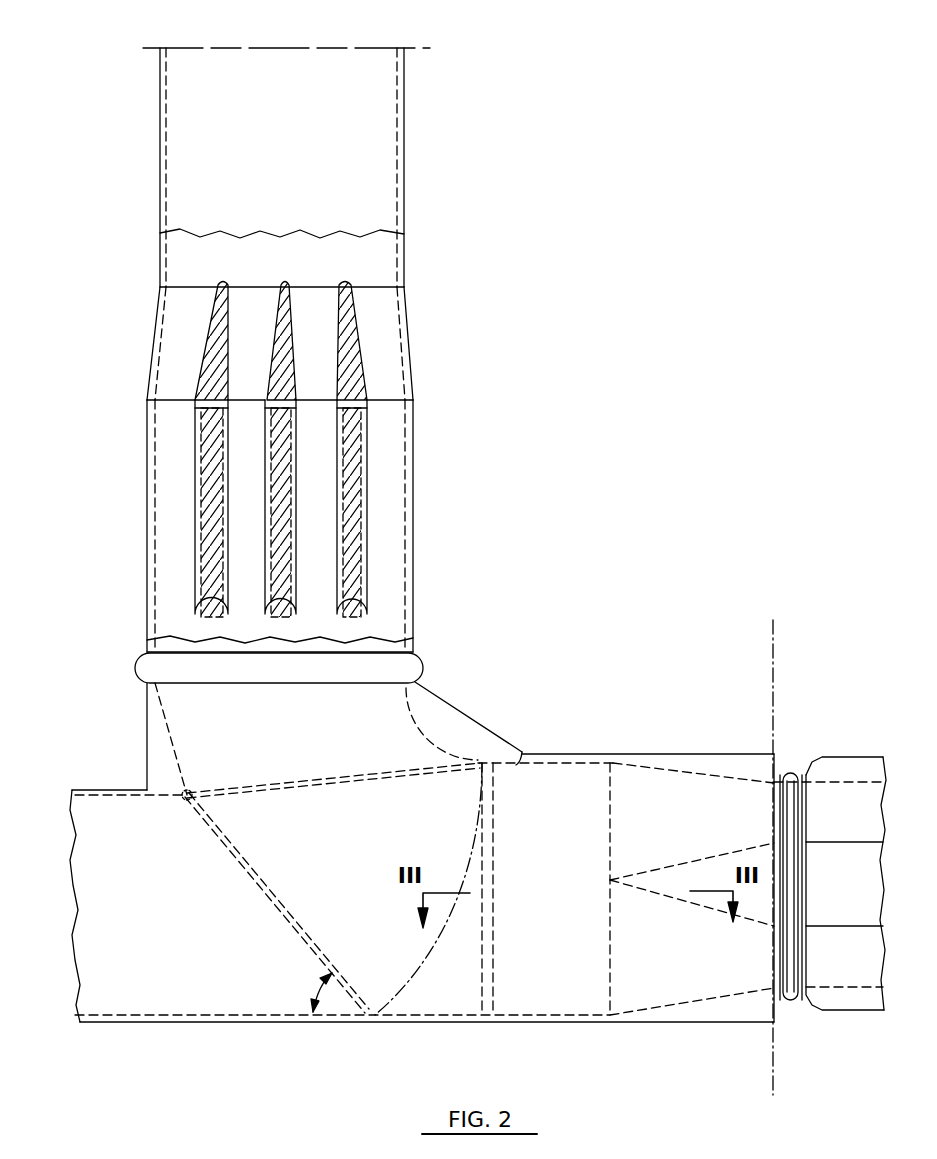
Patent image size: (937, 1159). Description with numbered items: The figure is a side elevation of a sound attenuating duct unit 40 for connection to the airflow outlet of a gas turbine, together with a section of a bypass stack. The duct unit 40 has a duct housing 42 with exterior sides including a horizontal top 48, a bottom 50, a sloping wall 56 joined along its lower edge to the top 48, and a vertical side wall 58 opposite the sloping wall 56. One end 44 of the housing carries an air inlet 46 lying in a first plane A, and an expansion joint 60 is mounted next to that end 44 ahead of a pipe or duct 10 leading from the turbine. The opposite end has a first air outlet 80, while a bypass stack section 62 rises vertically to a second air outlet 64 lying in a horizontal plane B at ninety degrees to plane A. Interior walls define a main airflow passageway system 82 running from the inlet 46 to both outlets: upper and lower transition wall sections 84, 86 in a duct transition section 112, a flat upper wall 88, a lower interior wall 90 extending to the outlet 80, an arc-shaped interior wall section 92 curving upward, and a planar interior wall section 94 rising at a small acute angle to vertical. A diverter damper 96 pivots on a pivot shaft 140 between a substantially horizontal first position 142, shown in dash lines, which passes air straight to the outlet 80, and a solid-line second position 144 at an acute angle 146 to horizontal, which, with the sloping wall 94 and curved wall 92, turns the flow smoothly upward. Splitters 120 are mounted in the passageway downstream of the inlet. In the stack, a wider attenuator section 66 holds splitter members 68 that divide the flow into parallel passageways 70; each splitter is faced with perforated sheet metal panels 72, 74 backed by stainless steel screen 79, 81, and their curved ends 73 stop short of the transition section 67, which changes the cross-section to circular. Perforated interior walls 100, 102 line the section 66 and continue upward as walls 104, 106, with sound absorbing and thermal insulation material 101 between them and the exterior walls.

The fuel pipe 10 is at (835, 760).
The sound attenuating duct unit 40 is at (500, 708).
The duct housing 42 is at (590, 752).
The end 44 is at (777, 758).
The air inlet 46 is at (774, 955).
The horizontal top 48 is at (657, 752).
The bottom 50 is at (610, 1022).
The sloping wall 56 is at (417, 681).
The vertical side wall 58 is at (147, 720).
The expansion joint 60 is at (790, 998).
The bypass stack section 62 is at (380, 207).
The air outlet 64 is at (303, 62).
The wider section 66 is at (393, 435).
The transition section 67 is at (407, 307).
The splitter members 68 is at (360, 355).
The parallel passageways 70 is at (392, 515).
The perforated sheet metal panel 72 is at (195, 460).
The curved ends 73 is at (283, 410).
The perforated sheet metal panel 74 is at (202, 498).
The stainless steel screen 79 is at (363, 558).
The air outlet 80 is at (95, 843).
The stainless steel screen 81 is at (345, 593).
The main airflow passageway system 82 is at (165, 690).
The upper transition wall section 84 is at (683, 773).
The lower transition wall section 86 is at (650, 1022).
The flat upper wall 88 is at (520, 760).
The lower interior wall 90 is at (435, 1022).
The arc-shaped interior wall section 92 is at (415, 718).
The planar interior wall section 94 is at (173, 740).
The diverter damper 96 is at (285, 903).
The perforated interior wall 100 is at (160, 352).
The sound absorbing and thermal insulation material 101 is at (147, 750).
The perforated interior wall 102 is at (413, 478).
The perforated interior wall 104 is at (160, 166).
The perforated interior wall 106 is at (403, 135).
The duct transition section 112 is at (757, 1022).
The splitters 120 is at (518, 992).
The pivot shaft 140 is at (193, 790).
The first position 142 is at (403, 777).
The second position 144 is at (350, 988).
The acute angle 146 is at (313, 990).
The first plane A is at (775, 640).
The plane B is at (375, 47).